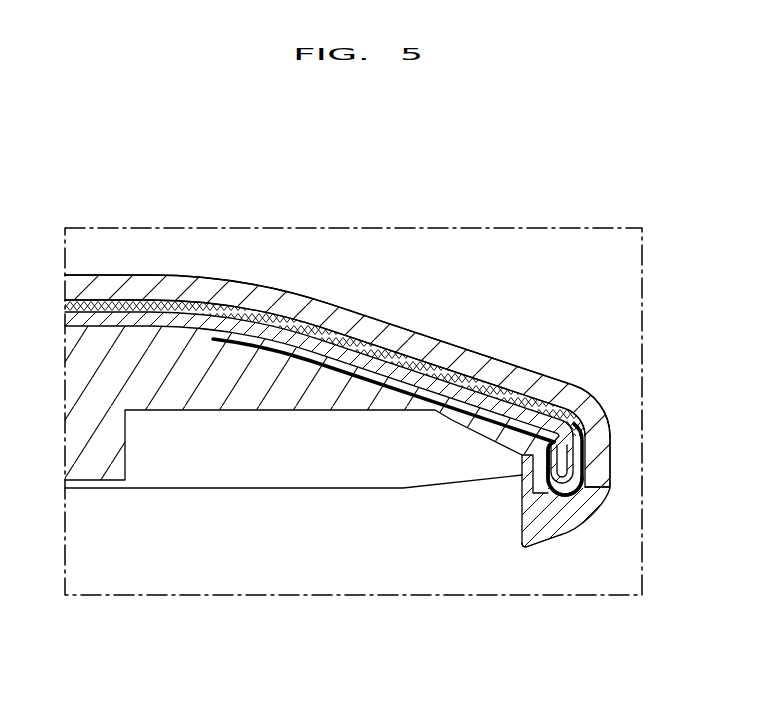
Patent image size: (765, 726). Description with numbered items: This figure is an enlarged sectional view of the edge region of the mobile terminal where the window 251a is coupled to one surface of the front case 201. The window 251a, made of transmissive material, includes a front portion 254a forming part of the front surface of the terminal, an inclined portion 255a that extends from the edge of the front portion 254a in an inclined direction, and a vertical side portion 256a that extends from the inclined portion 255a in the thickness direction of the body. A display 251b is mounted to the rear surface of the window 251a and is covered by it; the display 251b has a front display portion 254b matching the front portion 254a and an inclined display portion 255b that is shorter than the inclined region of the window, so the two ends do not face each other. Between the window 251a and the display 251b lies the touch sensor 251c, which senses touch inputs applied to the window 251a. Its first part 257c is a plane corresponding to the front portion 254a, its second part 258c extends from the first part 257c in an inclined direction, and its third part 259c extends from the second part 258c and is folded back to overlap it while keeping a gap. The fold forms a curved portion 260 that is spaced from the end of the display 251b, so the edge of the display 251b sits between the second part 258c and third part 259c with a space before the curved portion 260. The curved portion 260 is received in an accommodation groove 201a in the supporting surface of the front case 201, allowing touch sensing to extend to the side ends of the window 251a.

The front case 201 is at (382, 363).
The accommodation groove 201a is at (540, 500).
The window 251a is at (382, 363).
The display 251b is at (382, 363).
The touch sensor 251c is at (382, 363).
The front portion 254a is at (100, 275).
The front display portion 254b is at (143, 318).
The inclined portion 255a is at (373, 313).
The inclined display portion 255b is at (287, 329).
The vertical side portion 256a is at (612, 452).
The first part 257c is at (117, 310).
The second part 258c is at (390, 348).
The third part 259c is at (517, 529).
The curved portion 260 is at (567, 497).